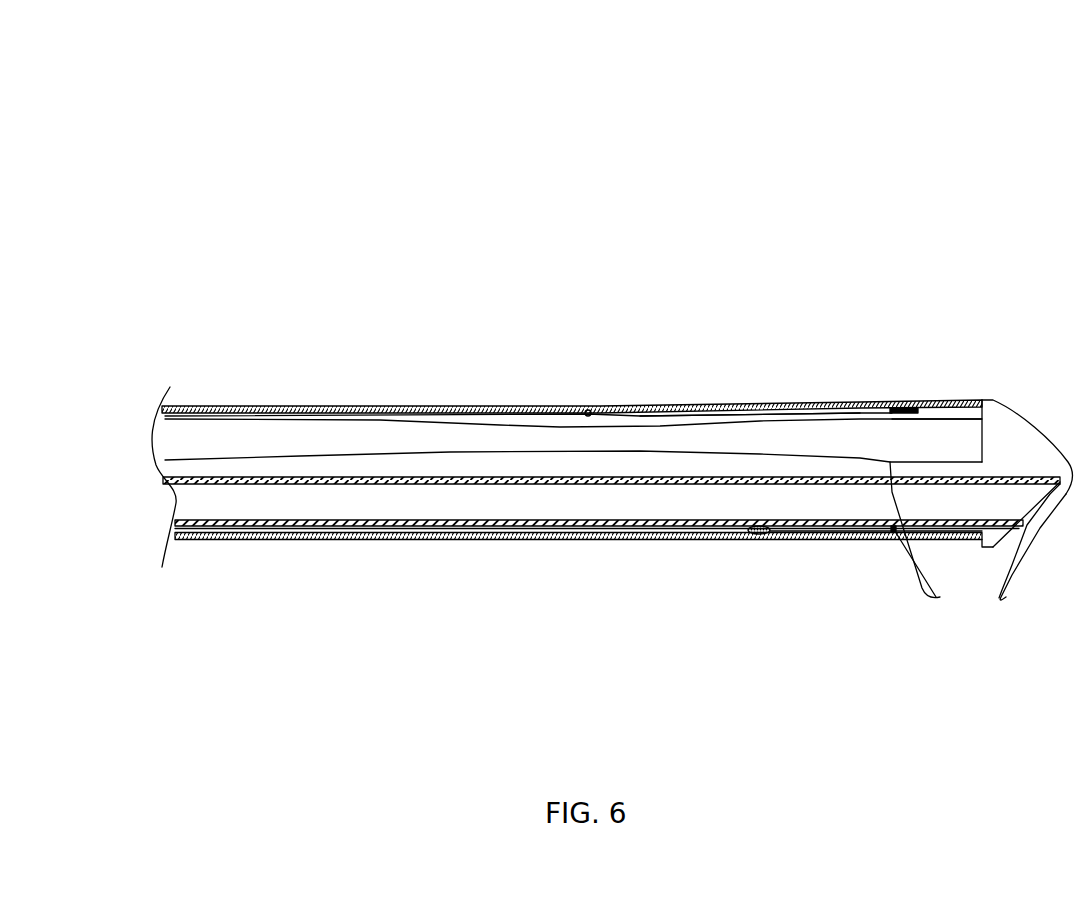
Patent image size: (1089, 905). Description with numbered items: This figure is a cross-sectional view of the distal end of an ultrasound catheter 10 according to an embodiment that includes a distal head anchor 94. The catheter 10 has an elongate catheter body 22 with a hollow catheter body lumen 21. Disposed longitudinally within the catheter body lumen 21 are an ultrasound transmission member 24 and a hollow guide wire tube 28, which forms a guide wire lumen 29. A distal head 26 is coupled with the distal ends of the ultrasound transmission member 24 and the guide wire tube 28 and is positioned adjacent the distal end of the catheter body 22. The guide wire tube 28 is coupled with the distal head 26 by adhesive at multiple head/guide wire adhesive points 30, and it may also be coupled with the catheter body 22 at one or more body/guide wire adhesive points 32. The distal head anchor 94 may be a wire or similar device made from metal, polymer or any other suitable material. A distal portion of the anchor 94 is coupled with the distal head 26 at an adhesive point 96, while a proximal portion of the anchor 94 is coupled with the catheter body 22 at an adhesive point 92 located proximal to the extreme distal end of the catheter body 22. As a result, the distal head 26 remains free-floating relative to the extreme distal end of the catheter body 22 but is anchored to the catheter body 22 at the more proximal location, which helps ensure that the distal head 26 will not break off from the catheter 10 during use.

The ultrasound catheter 10 is at (680, 74).
The catheter body lumen 21 is at (480, 472).
The catheter body 22 is at (622, 407).
The ultrasound transmission member 24 is at (307, 430).
The distal head 26 is at (995, 400).
The guide wire tube 28 is at (427, 522).
The guide wire lumen 29 is at (517, 502).
The head/guide wire adhesive points 30 is at (978, 541).
The body/guide wire adhesive points 32 is at (758, 532).
The adhesive point 92 is at (588, 410).
The distal head anchor 94 is at (690, 415).
The adhesive point 96 is at (907, 405).